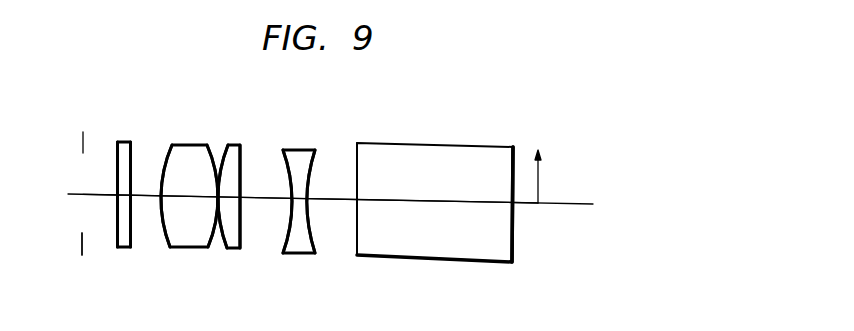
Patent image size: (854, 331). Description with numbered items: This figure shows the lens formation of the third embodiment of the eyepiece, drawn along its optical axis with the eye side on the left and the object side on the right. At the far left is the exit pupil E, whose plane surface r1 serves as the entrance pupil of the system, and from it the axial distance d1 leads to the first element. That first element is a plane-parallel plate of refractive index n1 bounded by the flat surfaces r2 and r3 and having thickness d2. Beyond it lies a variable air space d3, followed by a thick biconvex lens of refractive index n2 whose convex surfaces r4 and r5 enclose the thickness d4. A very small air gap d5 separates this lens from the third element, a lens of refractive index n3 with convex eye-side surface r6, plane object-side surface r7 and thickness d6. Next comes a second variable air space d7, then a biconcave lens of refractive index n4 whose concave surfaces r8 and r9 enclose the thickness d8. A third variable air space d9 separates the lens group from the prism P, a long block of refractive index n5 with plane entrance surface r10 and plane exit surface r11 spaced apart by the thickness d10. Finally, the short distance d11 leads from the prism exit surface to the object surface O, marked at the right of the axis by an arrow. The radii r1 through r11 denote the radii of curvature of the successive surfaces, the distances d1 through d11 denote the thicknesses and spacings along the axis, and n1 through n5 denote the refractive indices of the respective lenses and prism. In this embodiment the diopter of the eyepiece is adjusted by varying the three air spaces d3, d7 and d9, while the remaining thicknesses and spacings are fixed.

The exit pupil E is at (82, 133).
The object surface O is at (541, 167).
The prism P is at (469, 145).
The refractive index of first lens n1 is at (122, 143).
The refractive index of second lens n2 is at (184, 149).
The refractive index of third lens n3 is at (239, 148).
The refractive index of fourth lens n4 is at (299, 153).
The refractive index of prism n5 is at (387, 147).
The distance from entrance pupil to first lens d1 is at (93, 194).
The thickness of first lens d2 is at (121, 193).
The variable air space between first and second lens d3 is at (143, 196).
The thickness of second lens d4 is at (182, 196).
The air space between second and third lens d5 is at (218, 190).
The thickness of third lens d6 is at (238, 196).
The variable air space between third and fourth lens d7 is at (267, 198).
The thickness of fourth lens d8 is at (308, 190).
The variable air space between fourth lens and prism d9 is at (318, 198).
The thickness of prism d10 is at (423, 200).
The distance from prism to object surface d11 is at (523, 202).
The entrance pupil surface r1 is at (80, 243).
The first surface of first lens r2 is at (117, 243).
The second surface of first lens r3 is at (130, 242).
The first surface of second lens r4 is at (163, 246).
The second surface of second lens r5 is at (210, 247).
The first surface of third lens r6 is at (226, 248).
The second surface of third lens r7 is at (245, 245).
The first surface of fourth lens r8 is at (279, 251).
The second surface of fourth lens r9 is at (314, 246).
The entrance surface of prism r10 is at (357, 255).
The exit surface of prism r11 is at (513, 242).